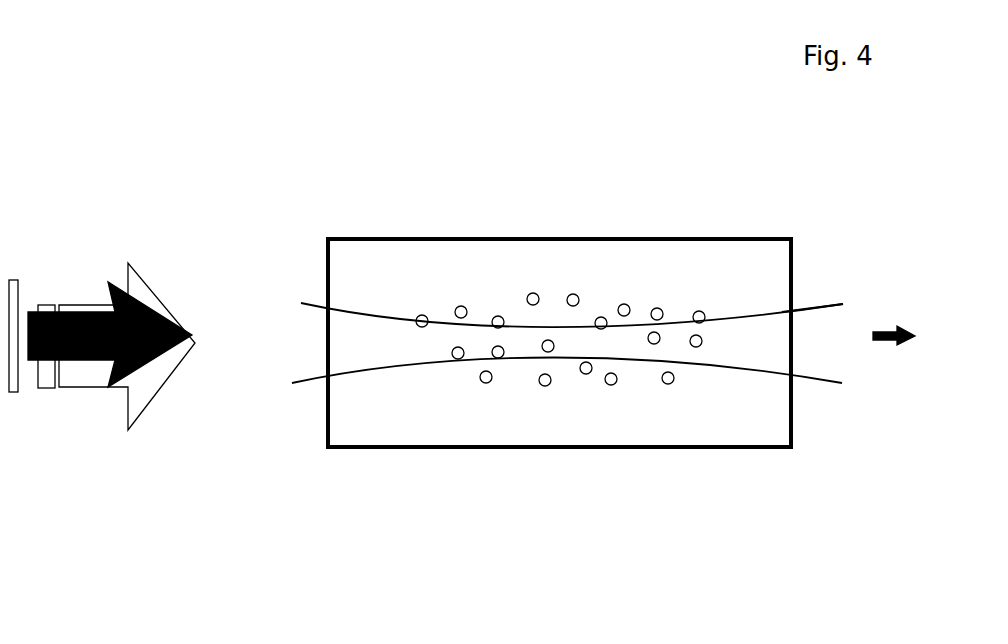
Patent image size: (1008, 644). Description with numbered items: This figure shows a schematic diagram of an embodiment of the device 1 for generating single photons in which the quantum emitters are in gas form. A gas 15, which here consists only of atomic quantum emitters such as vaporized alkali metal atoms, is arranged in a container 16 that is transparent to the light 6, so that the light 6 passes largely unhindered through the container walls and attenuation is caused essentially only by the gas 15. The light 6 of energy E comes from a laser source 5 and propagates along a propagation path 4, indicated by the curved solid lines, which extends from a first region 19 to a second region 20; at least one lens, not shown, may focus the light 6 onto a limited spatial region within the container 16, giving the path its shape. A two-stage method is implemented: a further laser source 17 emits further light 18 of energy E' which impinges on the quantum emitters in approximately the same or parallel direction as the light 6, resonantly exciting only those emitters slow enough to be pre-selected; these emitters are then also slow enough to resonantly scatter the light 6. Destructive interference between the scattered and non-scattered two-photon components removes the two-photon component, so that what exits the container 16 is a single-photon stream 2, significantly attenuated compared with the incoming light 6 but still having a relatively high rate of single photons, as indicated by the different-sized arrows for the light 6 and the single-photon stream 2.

The device 1 is at (559, 403).
The single-photon stream 2 is at (893, 342).
The propagation path 4 is at (301, 303).
The laser source 5 is at (13, 278).
The light 6 is at (35, 308).
The gas 15 is at (537, 404).
The container 16 is at (403, 450).
The further laser source 17 is at (47, 390).
The further light 18 is at (87, 388).
The first region 19 is at (272, 401).
The second region 20 is at (863, 297).